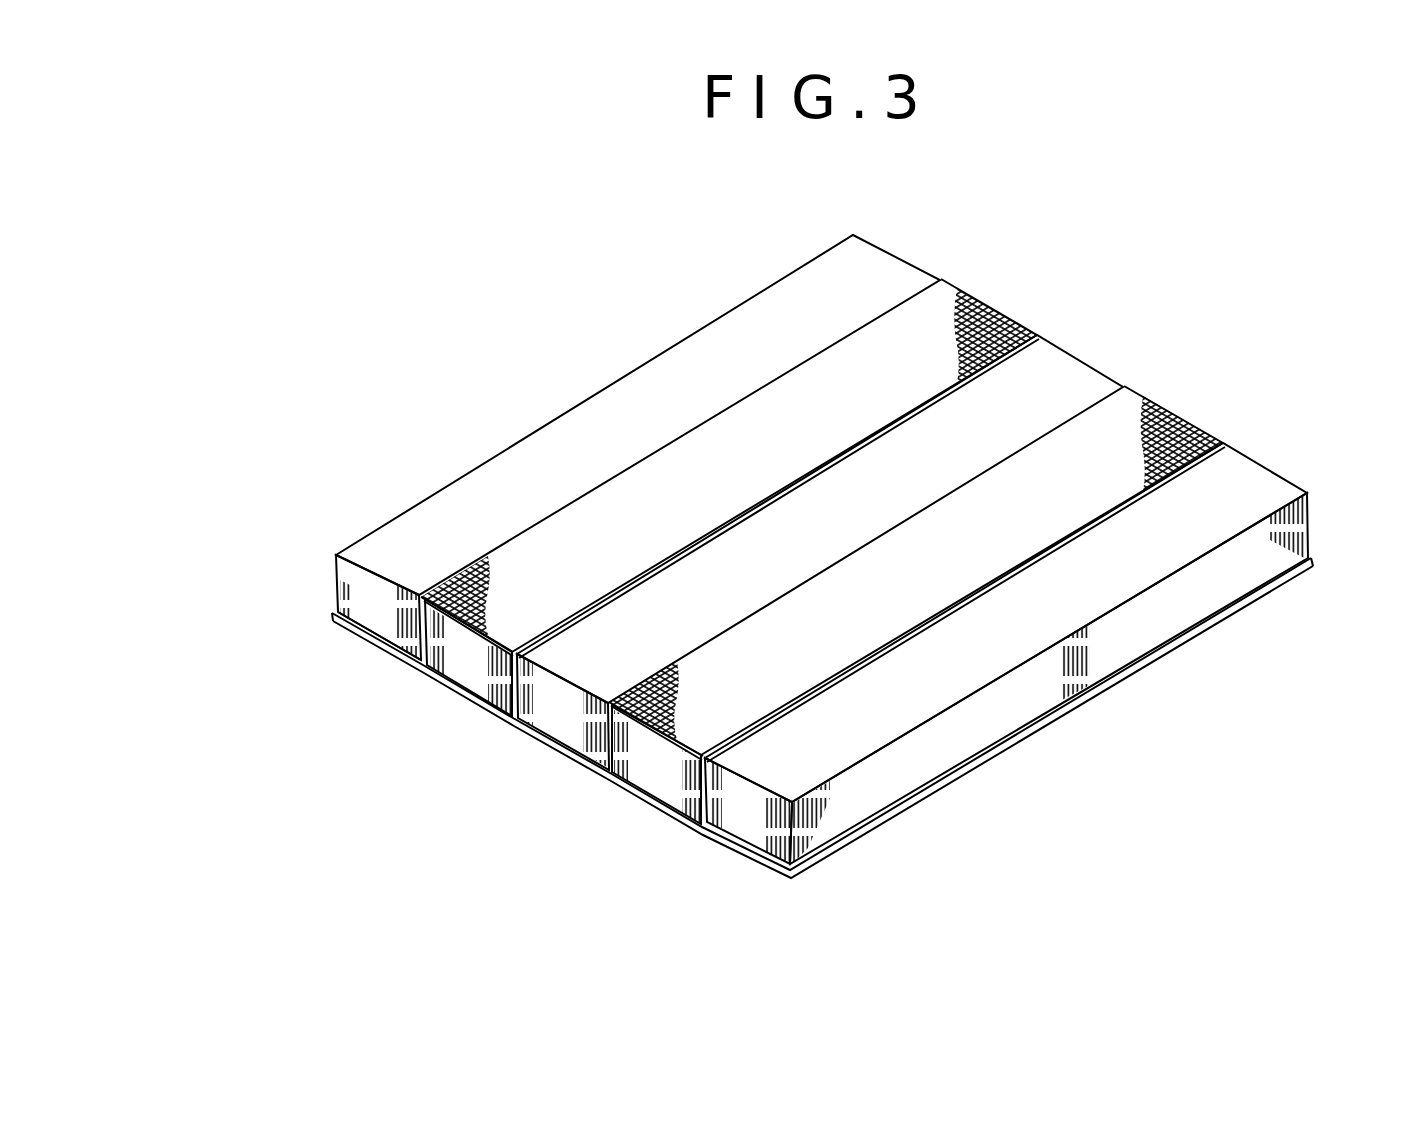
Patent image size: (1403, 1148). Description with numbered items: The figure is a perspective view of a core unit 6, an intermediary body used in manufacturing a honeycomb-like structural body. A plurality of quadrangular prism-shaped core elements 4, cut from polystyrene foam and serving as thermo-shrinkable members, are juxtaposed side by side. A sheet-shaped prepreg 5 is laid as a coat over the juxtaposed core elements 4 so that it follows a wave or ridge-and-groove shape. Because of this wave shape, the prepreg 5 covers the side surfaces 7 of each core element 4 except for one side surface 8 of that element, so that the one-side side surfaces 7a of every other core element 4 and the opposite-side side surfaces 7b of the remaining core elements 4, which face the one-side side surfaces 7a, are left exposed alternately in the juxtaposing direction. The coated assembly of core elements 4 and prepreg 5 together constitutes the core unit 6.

The core element 4 is at (455, 478).
The prepreg 5 is at (740, 853).
The core unit 6 is at (1182, 228).
The side surface 7 is at (503, 702).
The one-side side surface 7a is at (370, 640).
The opposite-side side surface 7b is at (372, 550).
The side surface 8 is at (822, 515).